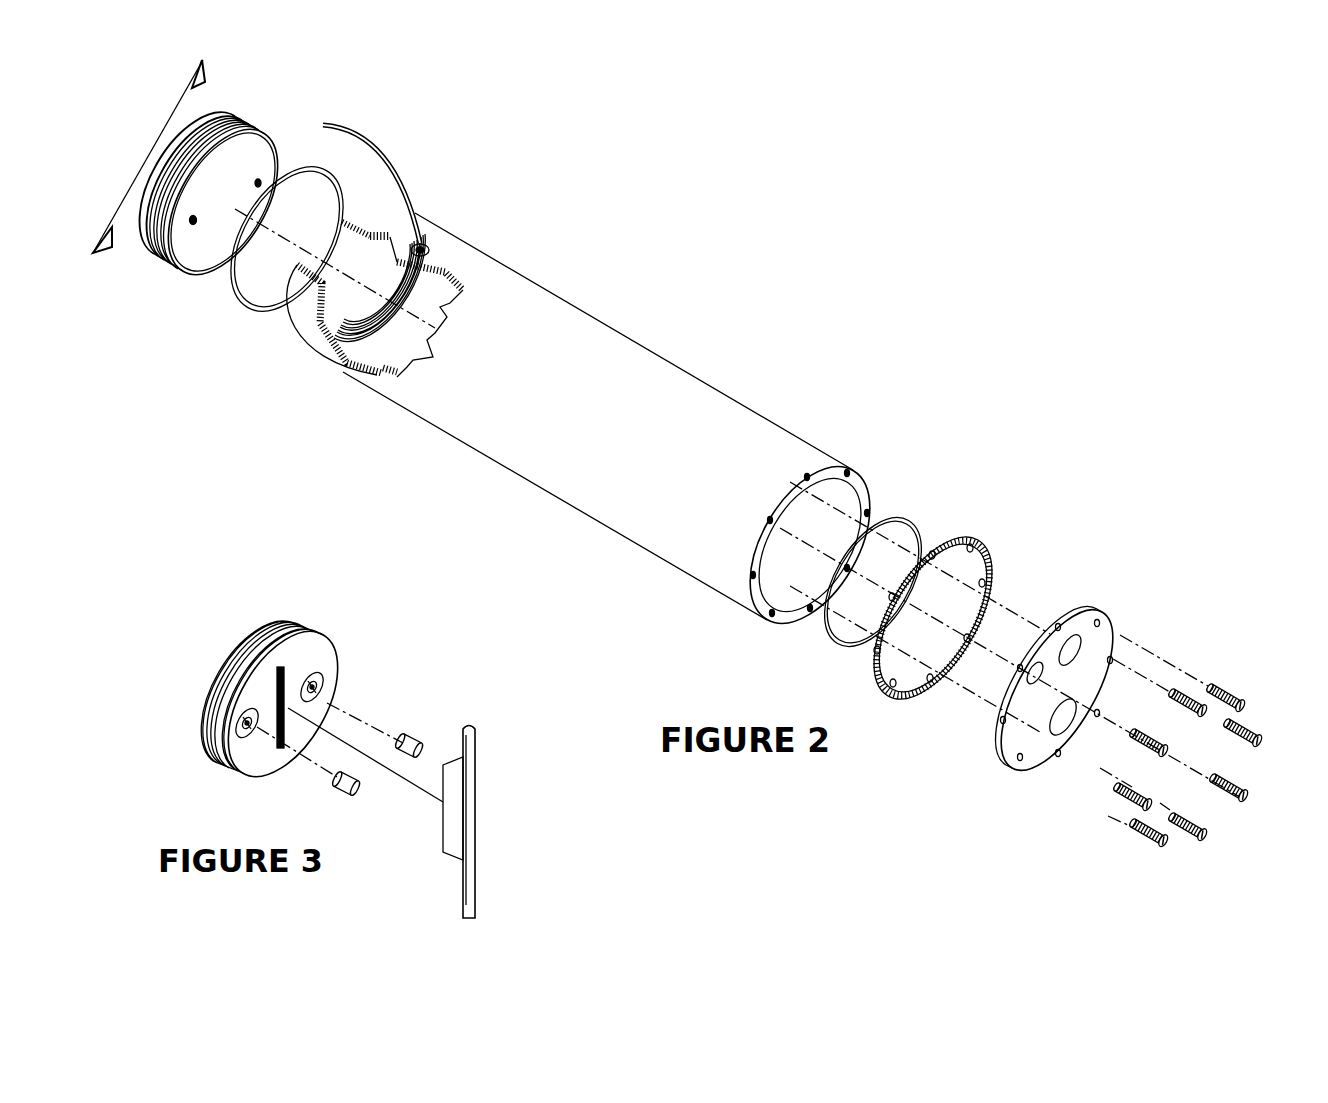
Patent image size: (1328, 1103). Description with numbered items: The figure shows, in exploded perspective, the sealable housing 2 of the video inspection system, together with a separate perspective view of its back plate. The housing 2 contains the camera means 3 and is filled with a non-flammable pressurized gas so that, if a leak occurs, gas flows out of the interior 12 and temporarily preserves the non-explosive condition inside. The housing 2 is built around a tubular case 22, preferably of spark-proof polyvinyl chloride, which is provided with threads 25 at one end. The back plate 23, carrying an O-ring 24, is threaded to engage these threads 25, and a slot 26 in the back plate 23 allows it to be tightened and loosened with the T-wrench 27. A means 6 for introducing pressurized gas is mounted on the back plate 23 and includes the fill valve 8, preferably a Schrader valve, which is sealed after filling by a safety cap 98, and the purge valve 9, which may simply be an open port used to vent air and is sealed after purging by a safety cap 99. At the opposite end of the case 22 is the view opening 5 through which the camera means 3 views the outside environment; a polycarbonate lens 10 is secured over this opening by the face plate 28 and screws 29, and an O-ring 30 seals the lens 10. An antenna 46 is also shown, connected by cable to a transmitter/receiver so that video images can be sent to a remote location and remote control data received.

In FIG. 2, the housing 2 is at (755, 360).
In FIG. 2, the camera means 3 is at (159, 162).
In FIG. 2, the view opening 5 is at (821, 527).
In FIG. 3, the means for introducing pressurized gas 6 is at (320, 698).
In FIG. 3, the fill valve 8 is at (313, 678).
In FIG. 3, the purge valve 9 is at (248, 737).
In FIG. 2, the lens 10 is at (980, 563).
In FIG. 2, the interior 12 is at (358, 312).
In FIG. 2, the tubular case 22 is at (570, 327).
In FIG. 2, the back plate 23 is at (158, 253).
In FIG. 3, the back plate 23 is at (330, 688).
In FIG. 2, the O-ring 24 is at (260, 313).
In FIG. 2, the threads 25 is at (377, 343).
In FIG. 3, the slot 26 is at (278, 690).
In FIG. 3, the T-wrench 27 is at (452, 822).
In FIG. 2, the face plate 28 is at (1113, 630).
In FIG. 2, the screws 29 is at (1243, 732).
In FIG. 2, the O-ring 30 is at (913, 528).
In FIG. 2, the antenna 46 is at (420, 243).
In FIG. 3, the safety cap 98 is at (343, 790).
In FIG. 3, the safety cap 99 is at (413, 738).